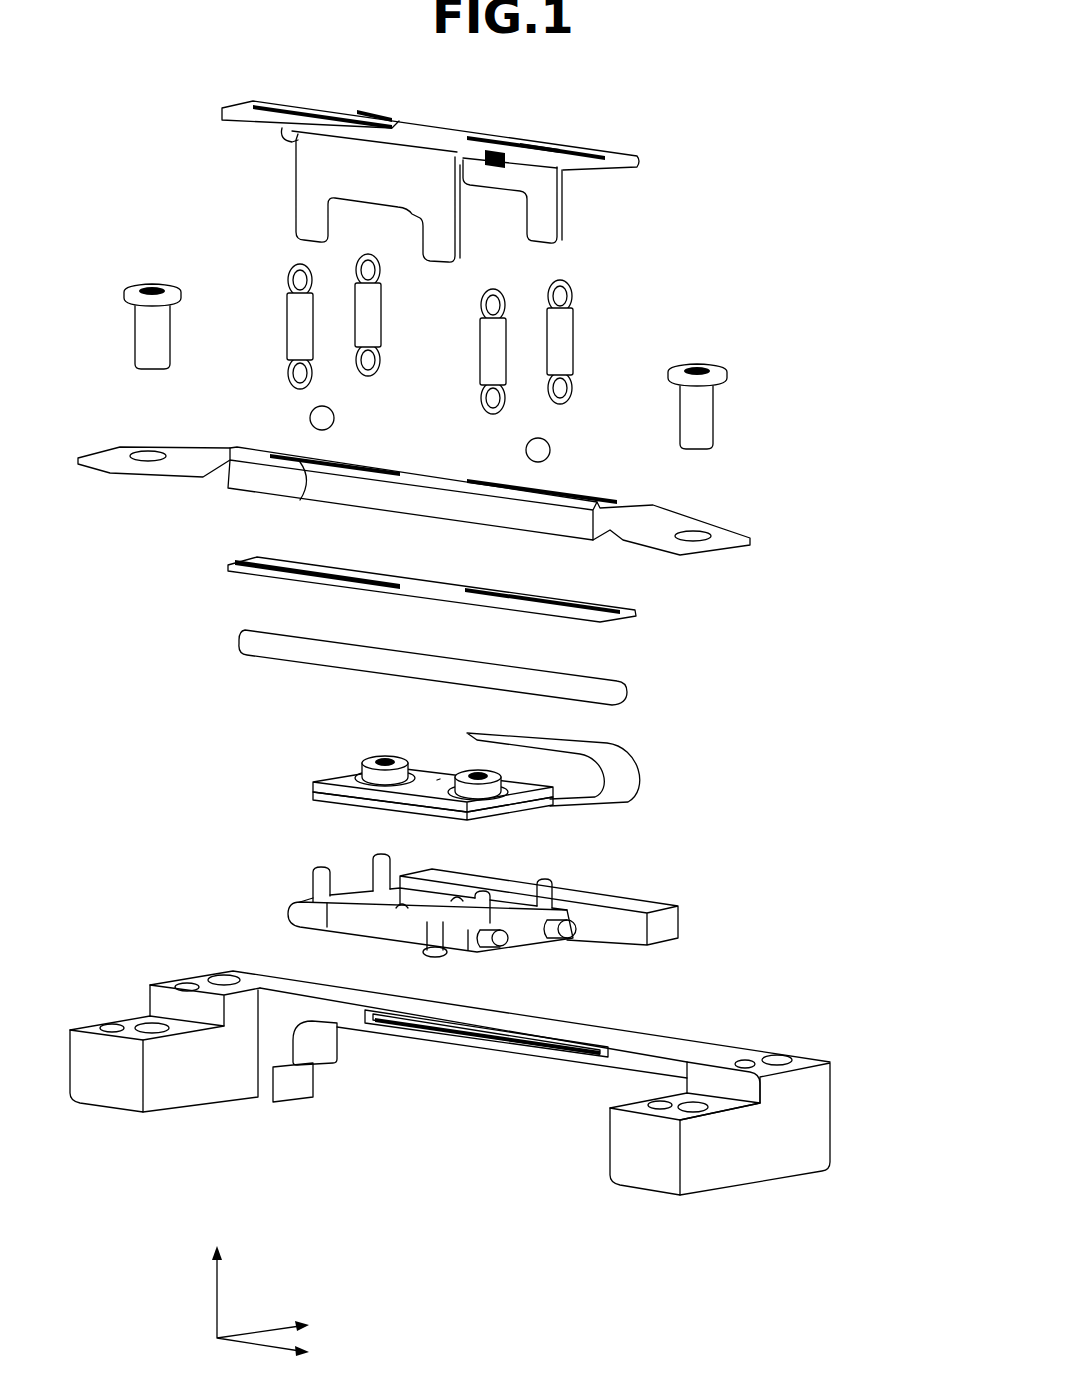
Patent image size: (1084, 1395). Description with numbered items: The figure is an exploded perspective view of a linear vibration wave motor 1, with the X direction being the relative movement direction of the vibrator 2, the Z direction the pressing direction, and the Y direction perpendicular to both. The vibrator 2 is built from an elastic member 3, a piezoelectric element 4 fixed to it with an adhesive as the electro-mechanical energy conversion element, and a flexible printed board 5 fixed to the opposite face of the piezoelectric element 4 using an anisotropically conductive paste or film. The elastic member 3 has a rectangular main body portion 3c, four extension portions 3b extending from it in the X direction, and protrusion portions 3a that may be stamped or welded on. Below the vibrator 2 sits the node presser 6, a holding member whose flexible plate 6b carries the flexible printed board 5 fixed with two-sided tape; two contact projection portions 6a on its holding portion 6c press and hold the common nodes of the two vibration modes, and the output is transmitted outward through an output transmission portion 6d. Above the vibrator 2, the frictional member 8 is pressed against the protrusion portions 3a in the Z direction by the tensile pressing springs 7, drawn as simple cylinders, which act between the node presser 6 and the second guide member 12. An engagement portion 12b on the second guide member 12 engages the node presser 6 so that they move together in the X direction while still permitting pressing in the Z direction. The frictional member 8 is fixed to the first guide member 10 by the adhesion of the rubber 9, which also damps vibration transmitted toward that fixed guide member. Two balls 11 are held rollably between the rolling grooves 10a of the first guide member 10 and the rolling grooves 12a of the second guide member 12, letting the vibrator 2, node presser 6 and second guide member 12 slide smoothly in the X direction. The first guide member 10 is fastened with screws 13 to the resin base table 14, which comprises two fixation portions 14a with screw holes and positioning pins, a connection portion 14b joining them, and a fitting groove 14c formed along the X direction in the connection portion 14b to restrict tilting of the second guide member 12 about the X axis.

The vibration wave motor 1 is at (690, 67).
The vibrator 2 is at (496, 775).
The elastic member 3 is at (418, 775).
The protrusion portions 3a is at (362, 768).
The extension portions 3b is at (498, 815).
The main body portion 3c is at (437, 778).
The piezoelectric element 4 is at (314, 797).
The flexible printed board 5 is at (632, 762).
The node presser 6 is at (487, 922).
The contact projection portions 6a is at (400, 909).
The flexible plate 6b is at (668, 925).
The holding portion 6c is at (313, 876).
The output transmission portion 6d is at (437, 958).
The pressing springs 7 is at (575, 328).
The frictional member 8 is at (617, 692).
The rubber 9 is at (626, 608).
The first guide member 10 is at (457, 501).
The rolling grooves 10a is at (300, 490).
The balls 11 is at (308, 418).
The second guide member 12 is at (454, 181).
The rolling grooves 12a is at (596, 152).
The engagement portion 12b is at (308, 228).
The screws 13 is at (715, 420).
The base table 14 is at (503, 1111).
The fixation portions 14a is at (107, 1095).
The connection portion 14b is at (627, 1055).
The fitting groove 14c is at (473, 1040).